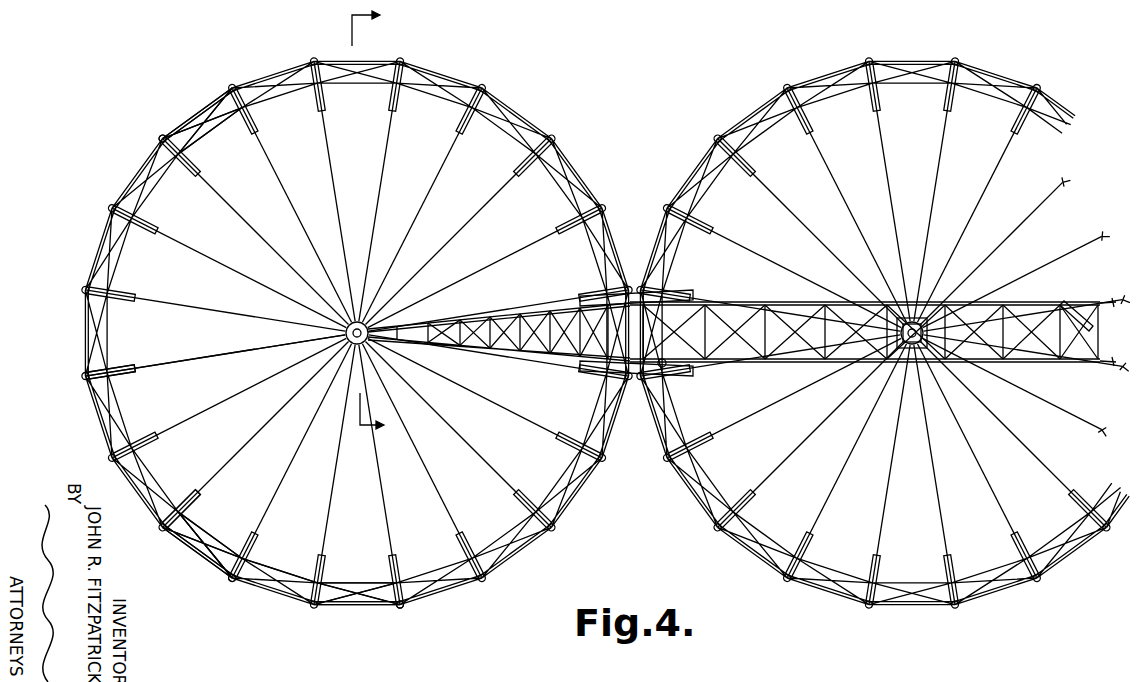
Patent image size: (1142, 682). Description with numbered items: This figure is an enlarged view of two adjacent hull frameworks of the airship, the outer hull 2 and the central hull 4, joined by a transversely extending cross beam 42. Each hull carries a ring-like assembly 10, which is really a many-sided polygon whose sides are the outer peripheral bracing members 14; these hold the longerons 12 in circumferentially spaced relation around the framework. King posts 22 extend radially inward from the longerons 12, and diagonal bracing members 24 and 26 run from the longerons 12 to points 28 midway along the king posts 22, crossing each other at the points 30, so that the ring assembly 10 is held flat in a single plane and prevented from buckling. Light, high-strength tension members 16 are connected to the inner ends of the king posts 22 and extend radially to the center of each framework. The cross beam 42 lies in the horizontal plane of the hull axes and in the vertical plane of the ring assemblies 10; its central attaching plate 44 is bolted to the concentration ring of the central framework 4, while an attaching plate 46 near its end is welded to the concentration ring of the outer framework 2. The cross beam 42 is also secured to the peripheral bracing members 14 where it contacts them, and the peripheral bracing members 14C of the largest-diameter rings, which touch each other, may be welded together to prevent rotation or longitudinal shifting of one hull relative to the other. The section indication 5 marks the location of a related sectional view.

The hull 2 is at (284, 46).
The hull 4 is at (913, 44).
The section line 5 is at (376, 223).
The ring-like assembly 10 is at (189, 108).
The longeron 12 is at (400, 607).
The peripheral bracing member 14 is at (253, 588).
The peripheral bracing member 14C is at (666, 372).
The tension member 16 is at (279, 183).
The king post 22 is at (462, 126).
The diagonal bracing member 24 is at (195, 523).
The diagonal bracing member 26 is at (166, 494).
The point midway of the king post 28 is at (116, 385).
The crossing point 30 is at (282, 576).
The cross beam 42 is at (559, 313).
The attaching plate 44 is at (921, 300).
The attaching plate 46 is at (374, 322).